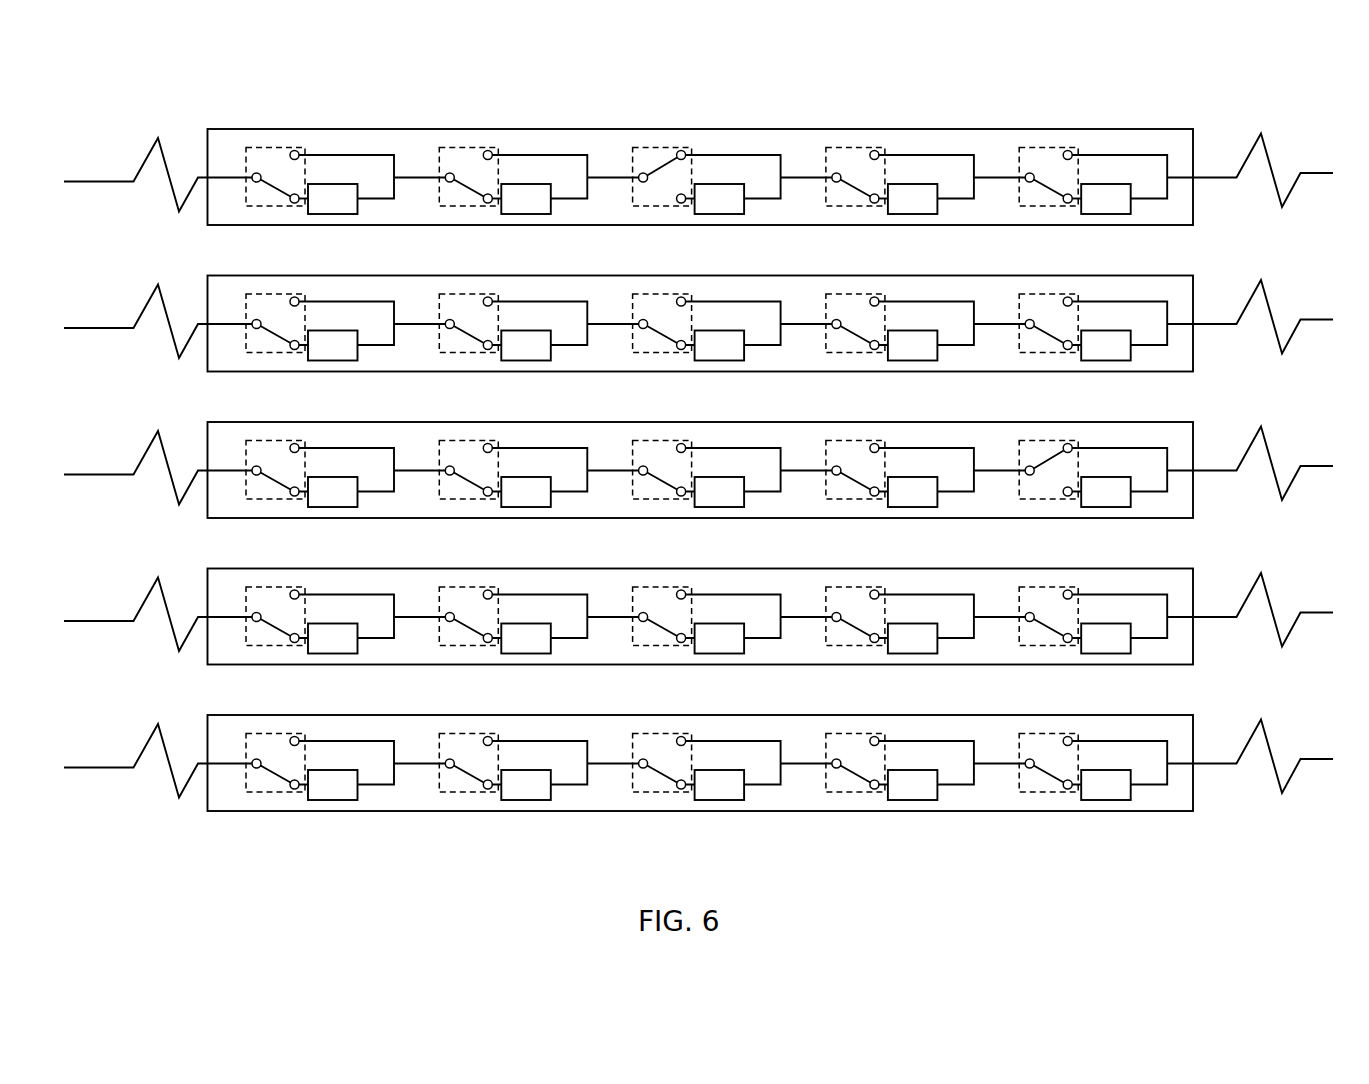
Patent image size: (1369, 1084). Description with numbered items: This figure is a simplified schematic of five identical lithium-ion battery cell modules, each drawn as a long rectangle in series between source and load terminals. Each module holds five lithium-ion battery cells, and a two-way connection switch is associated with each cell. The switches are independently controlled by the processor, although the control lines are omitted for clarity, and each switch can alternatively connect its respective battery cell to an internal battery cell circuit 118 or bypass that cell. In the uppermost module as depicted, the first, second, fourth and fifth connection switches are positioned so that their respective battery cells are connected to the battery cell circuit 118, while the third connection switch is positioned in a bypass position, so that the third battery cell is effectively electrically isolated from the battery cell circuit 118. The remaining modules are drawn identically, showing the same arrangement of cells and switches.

The internal battery cell circuit 118 is at (367, 155).